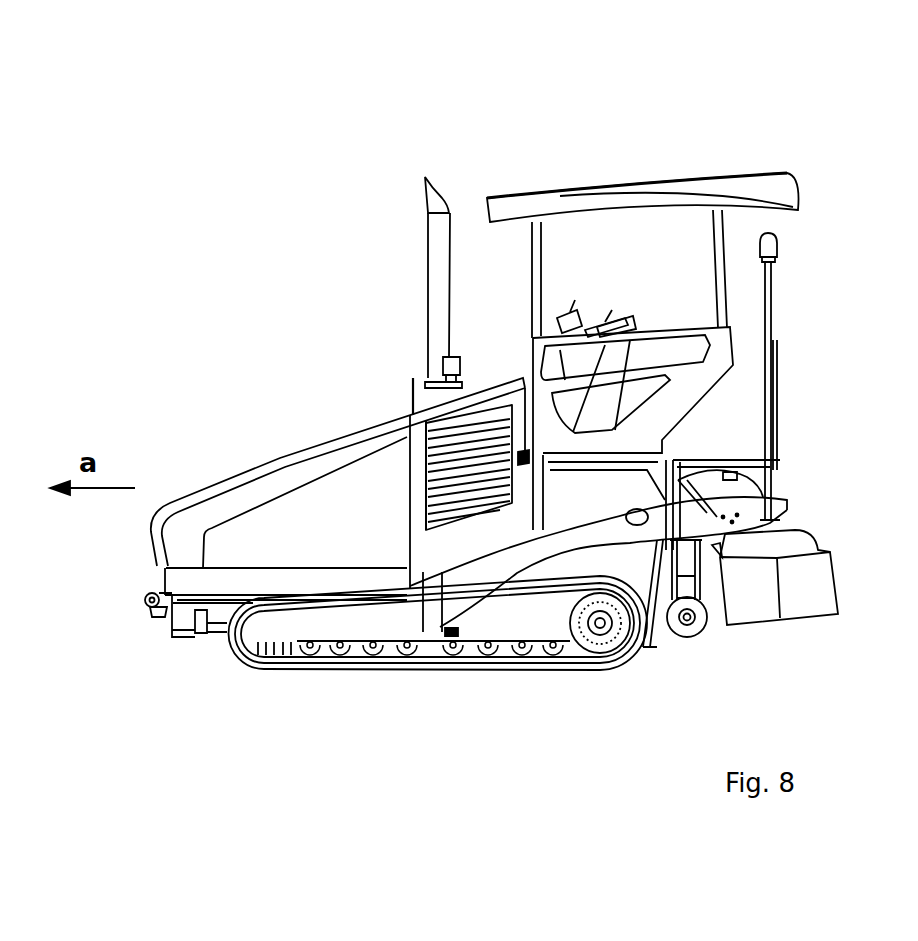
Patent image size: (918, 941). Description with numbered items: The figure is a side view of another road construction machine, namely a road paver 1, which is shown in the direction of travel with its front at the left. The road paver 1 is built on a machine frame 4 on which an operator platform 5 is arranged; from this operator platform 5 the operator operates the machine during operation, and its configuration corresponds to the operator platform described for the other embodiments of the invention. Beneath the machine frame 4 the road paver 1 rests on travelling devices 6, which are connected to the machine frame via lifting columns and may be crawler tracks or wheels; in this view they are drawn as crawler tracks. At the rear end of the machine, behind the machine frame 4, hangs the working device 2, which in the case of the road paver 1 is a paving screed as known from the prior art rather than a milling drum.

The road paver 1 is at (532, 136).
The working device 2 is at (793, 598).
The machine frame 4 is at (512, 550).
The operator platform 5 is at (617, 315).
The travelling devices 6 is at (392, 668).